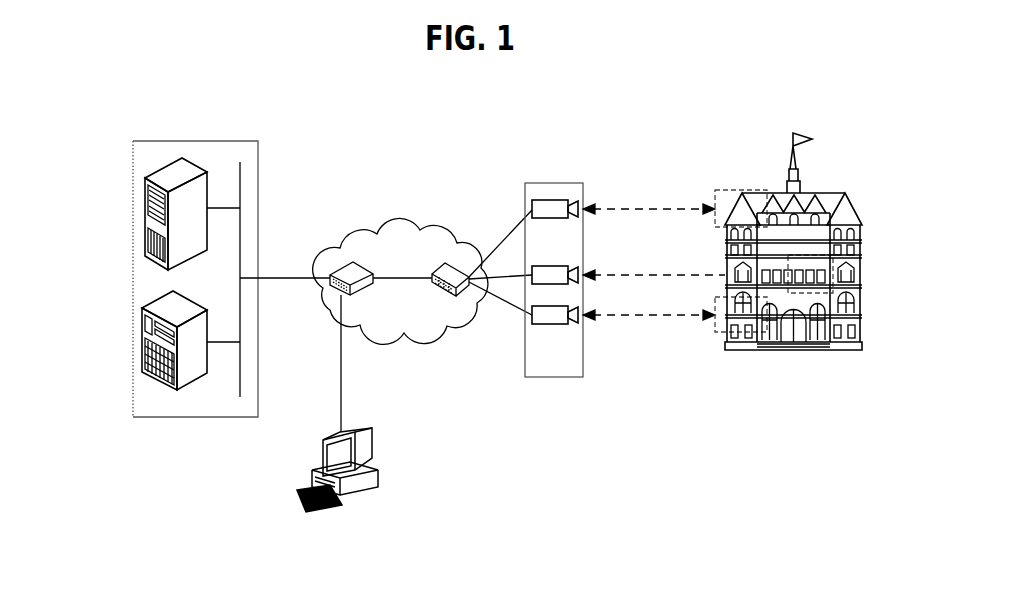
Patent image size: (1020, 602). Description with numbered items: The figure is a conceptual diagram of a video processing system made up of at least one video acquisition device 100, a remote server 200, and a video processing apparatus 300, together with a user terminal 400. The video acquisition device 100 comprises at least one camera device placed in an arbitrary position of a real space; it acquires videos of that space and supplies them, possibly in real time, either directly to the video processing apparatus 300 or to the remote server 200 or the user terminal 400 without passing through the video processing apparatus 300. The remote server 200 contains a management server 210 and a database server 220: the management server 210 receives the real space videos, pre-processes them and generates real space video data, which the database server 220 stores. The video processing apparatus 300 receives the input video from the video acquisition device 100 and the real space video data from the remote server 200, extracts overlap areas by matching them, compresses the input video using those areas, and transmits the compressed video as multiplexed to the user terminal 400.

The video acquisition device 100 is at (554, 183).
The remote server 200 is at (195, 141).
The management server 210 is at (145, 218).
The database server 220 is at (142, 345).
The video processing apparatus 300 is at (403, 228).
The user terminal 400 is at (320, 465).